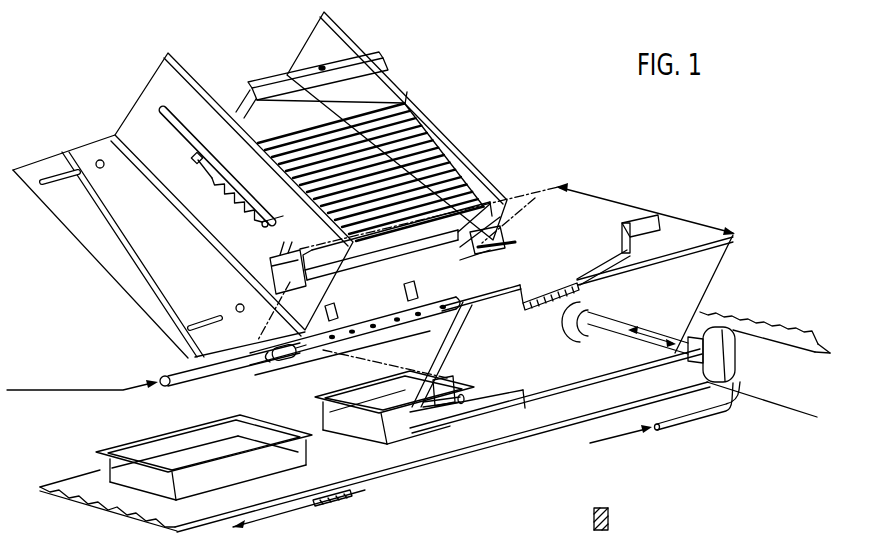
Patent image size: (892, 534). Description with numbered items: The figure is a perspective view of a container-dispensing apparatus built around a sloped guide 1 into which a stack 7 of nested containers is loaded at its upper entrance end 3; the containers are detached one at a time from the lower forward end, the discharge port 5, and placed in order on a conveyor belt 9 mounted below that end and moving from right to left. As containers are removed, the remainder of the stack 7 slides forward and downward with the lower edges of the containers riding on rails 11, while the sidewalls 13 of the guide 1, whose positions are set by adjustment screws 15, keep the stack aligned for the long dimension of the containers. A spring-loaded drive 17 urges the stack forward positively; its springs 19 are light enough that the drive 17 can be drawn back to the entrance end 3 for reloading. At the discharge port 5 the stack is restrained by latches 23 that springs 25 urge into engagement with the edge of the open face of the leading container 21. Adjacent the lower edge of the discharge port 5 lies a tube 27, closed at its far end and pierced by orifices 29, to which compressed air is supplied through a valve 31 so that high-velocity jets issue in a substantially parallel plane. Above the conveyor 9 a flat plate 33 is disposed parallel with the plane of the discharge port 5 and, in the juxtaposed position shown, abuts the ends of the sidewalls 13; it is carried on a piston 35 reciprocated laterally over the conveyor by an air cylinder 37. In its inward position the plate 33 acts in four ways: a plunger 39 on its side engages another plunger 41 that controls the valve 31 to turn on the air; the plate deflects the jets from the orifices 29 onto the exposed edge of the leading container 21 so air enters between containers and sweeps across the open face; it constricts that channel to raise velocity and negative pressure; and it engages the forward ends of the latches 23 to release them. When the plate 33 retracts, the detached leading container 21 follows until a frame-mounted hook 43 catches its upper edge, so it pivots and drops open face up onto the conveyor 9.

The sloped guide 1 is at (457, 122).
The entrance end 3 is at (246, 60).
The discharge port 5 is at (460, 263).
The stack 7 is at (428, 213).
The conveyor belt 9 is at (352, 461).
The rails 11 is at (350, 338).
The sidewalls 13 is at (160, 75).
The adjustment screws 15 is at (104, 167).
The spring-loaded drive 17 is at (372, 84).
The springs 19 is at (218, 201).
The leading container 21 is at (391, 265).
The latches 23 is at (300, 286).
The springs 25 is at (270, 268).
The tube 27 is at (173, 384).
The orifices 29 is at (375, 329).
The valve 31 is at (272, 360).
The flat plate 33 is at (539, 354).
The piston 35 is at (633, 341).
The air cylinder 37 is at (777, 381).
The plunger 39 is at (460, 394).
The plunger 41 is at (300, 360).
The hook 43 is at (586, 253).